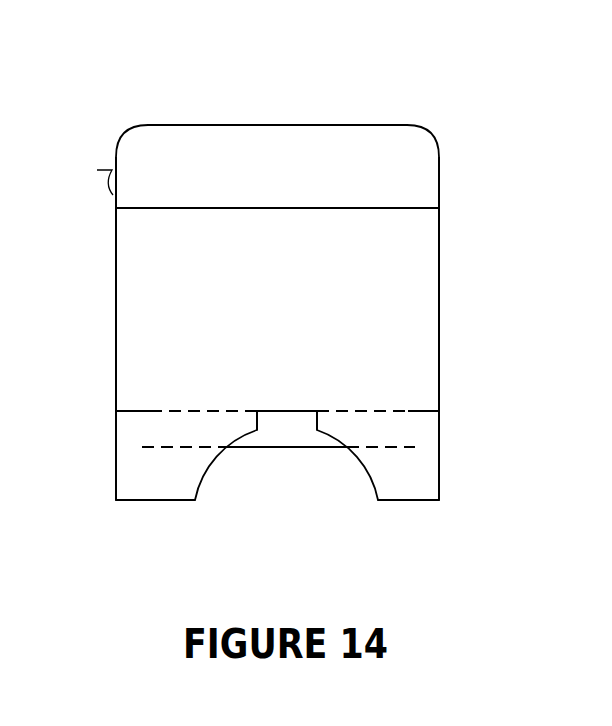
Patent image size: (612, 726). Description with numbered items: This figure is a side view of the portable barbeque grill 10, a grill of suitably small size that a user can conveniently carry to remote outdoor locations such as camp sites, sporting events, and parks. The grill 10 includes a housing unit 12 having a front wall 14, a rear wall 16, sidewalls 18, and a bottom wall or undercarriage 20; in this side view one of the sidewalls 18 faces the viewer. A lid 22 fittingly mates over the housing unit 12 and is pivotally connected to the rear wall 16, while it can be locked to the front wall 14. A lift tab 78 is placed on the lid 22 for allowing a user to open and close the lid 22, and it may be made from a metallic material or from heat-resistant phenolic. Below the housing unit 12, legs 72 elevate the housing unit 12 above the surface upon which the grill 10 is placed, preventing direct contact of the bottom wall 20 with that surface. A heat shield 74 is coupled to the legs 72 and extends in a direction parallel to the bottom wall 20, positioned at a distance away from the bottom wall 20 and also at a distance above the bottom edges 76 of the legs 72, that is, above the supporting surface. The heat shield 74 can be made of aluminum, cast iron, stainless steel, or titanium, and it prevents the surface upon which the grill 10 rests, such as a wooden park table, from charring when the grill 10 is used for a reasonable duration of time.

The portable barbeque grill 10 is at (445, 101).
The housing unit 12 is at (473, 280).
The front wall 14 is at (116, 330).
The rear wall 16 is at (440, 353).
The sidewalls 18 is at (349, 295).
The bottom wall 20 is at (275, 411).
The lid 22 is at (283, 169).
The legs 72 is at (136, 475).
The heat shield 74 is at (272, 450).
The bottom edges 76 is at (184, 502).
The lift tab 78 is at (106, 170).